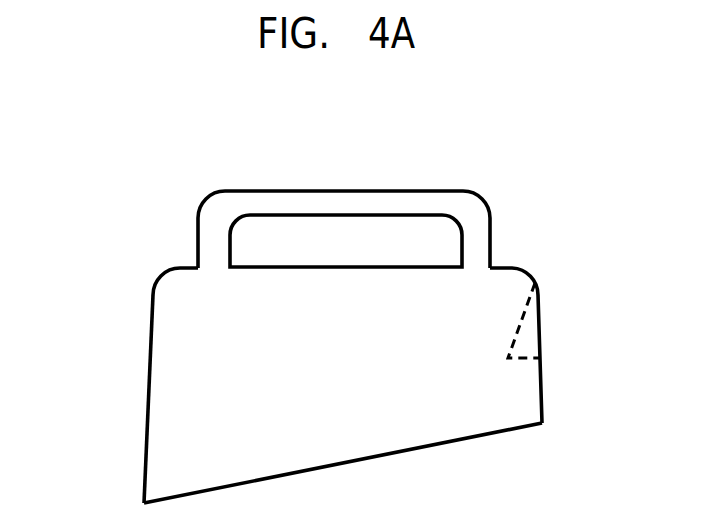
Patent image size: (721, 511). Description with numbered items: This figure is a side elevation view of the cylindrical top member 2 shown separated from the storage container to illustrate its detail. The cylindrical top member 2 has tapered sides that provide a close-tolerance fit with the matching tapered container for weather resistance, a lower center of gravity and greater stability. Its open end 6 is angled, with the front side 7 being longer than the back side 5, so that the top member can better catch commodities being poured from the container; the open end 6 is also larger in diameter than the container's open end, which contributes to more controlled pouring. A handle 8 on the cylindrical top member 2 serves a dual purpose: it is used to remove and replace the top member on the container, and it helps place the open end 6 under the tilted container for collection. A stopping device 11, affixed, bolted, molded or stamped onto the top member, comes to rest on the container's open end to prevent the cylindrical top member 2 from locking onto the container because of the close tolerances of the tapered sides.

The cylindrical top member 2 is at (287, 307).
The back side 5 is at (542, 373).
The open end 6 is at (375, 457).
The front side 7 is at (148, 383).
The handle 8 is at (323, 190).
The stopping device 11 is at (522, 315).